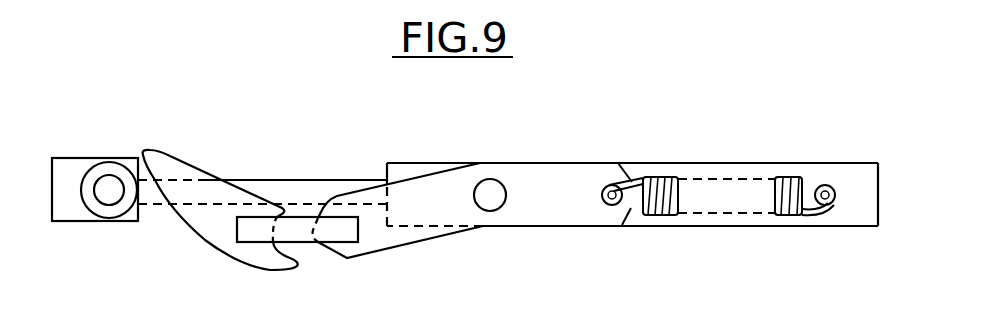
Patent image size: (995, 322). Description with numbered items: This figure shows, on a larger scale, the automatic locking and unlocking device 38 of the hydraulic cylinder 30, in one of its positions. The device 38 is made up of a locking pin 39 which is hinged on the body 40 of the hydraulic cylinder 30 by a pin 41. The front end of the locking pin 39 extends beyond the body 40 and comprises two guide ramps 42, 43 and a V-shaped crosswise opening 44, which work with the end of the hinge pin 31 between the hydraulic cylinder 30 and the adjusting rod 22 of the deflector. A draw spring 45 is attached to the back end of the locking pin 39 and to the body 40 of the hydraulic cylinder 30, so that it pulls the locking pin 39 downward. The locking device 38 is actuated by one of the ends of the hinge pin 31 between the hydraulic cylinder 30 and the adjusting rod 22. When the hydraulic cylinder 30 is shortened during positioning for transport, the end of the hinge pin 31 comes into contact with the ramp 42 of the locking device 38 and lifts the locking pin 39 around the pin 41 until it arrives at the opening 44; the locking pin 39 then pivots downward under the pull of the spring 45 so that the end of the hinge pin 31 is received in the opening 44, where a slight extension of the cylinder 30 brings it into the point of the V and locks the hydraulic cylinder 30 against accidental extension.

The adjusting rod 22 is at (72, 213).
The hinge pin 31 is at (108, 183).
The locking pin 39 is at (367, 195).
The guide ramp 42 is at (195, 230).
The guide ramp 43 is at (183, 163).
The V-shaped crosswise opening 44 is at (305, 210).
The automatic locking and unlocking device 38 is at (397, 252).
The body 40 is at (738, 222).
The pin 41 is at (490, 200).
The draw spring 45 is at (657, 220).
The hydraulic cylinder 30 is at (822, 228).